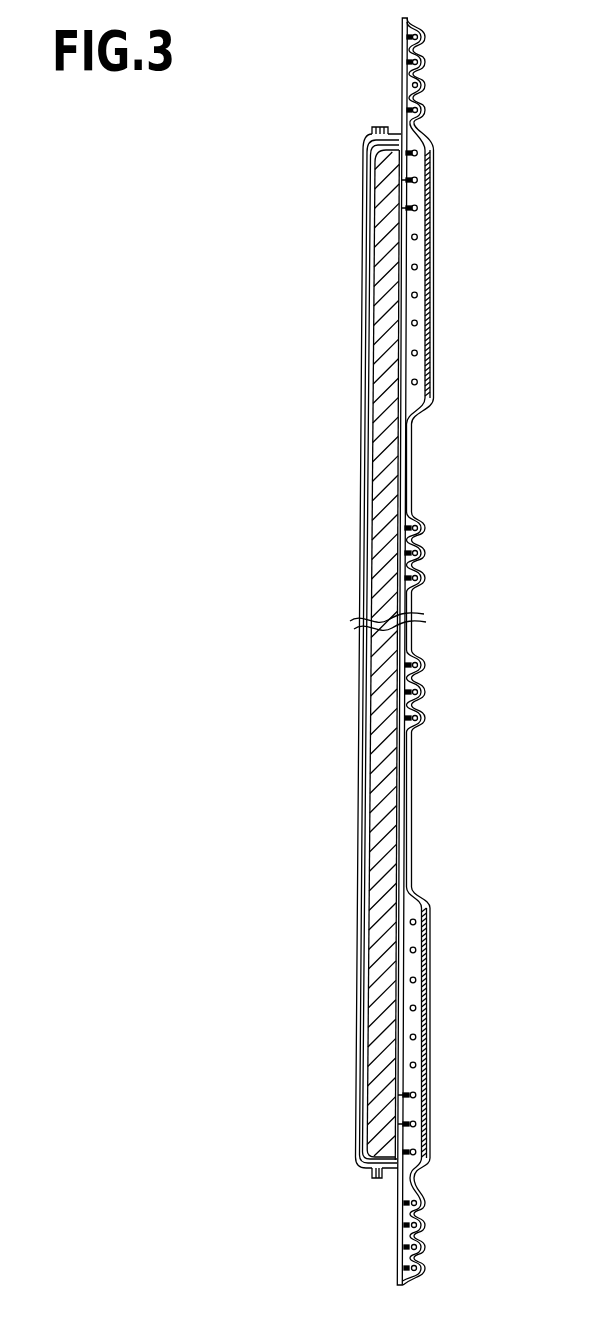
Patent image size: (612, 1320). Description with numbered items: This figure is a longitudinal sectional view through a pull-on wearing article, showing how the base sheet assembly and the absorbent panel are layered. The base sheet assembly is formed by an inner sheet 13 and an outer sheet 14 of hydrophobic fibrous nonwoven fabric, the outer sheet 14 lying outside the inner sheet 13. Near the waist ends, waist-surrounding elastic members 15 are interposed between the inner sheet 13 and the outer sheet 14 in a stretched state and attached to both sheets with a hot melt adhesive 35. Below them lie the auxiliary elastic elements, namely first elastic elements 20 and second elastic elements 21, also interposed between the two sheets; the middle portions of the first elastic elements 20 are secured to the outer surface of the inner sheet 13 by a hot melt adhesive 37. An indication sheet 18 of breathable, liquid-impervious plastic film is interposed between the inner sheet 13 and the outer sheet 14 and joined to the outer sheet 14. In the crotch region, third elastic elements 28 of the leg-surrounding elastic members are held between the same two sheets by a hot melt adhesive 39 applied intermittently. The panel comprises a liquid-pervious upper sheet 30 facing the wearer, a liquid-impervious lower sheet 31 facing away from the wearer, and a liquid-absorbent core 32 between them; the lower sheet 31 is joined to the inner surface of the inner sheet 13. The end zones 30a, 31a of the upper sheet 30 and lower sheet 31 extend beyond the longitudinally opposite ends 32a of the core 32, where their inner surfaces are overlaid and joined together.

The inner sheet 13 is at (405, 113).
The outer sheet 14 is at (432, 316).
The waist-surrounding elastic members 15 is at (425, 37).
The indication sheet 18 is at (430, 238).
The first elastic elements 20 is at (418, 153).
The second elastic elements 21 is at (417, 267).
The third elastic elements 28 is at (426, 528).
The upper sheet 30 is at (366, 415).
The end zones of the upper sheet 30a is at (400, 129).
The lower sheet 31 is at (397, 487).
The end zones of the lower sheet 31a is at (410, 127).
The core 32 is at (386, 345).
The ends of the core 32a is at (387, 165).
The hot melt adhesive 35 is at (413, 37).
The hot melt adhesive 37 is at (406, 181).
The hot melt adhesive 39 is at (404, 530).